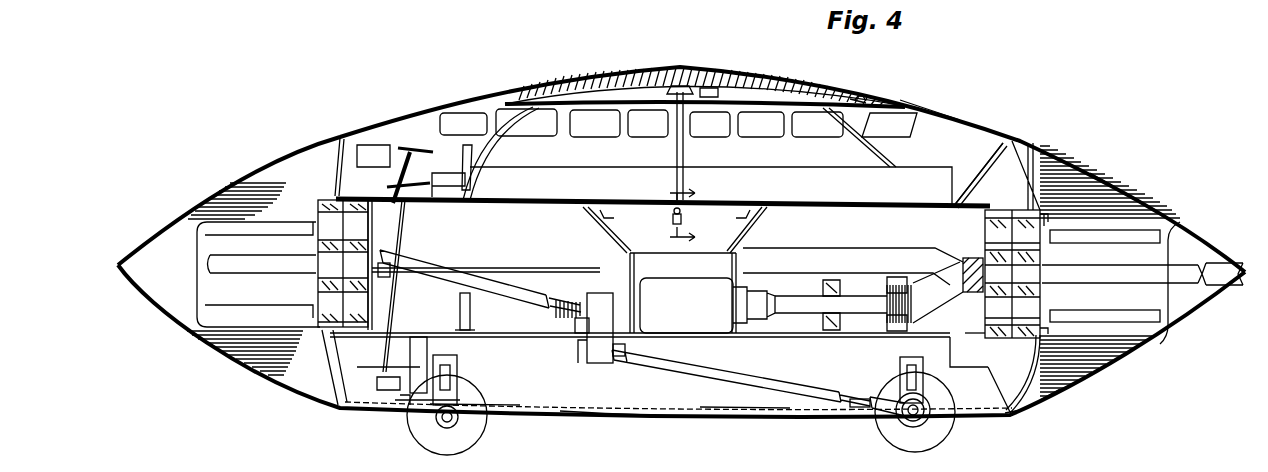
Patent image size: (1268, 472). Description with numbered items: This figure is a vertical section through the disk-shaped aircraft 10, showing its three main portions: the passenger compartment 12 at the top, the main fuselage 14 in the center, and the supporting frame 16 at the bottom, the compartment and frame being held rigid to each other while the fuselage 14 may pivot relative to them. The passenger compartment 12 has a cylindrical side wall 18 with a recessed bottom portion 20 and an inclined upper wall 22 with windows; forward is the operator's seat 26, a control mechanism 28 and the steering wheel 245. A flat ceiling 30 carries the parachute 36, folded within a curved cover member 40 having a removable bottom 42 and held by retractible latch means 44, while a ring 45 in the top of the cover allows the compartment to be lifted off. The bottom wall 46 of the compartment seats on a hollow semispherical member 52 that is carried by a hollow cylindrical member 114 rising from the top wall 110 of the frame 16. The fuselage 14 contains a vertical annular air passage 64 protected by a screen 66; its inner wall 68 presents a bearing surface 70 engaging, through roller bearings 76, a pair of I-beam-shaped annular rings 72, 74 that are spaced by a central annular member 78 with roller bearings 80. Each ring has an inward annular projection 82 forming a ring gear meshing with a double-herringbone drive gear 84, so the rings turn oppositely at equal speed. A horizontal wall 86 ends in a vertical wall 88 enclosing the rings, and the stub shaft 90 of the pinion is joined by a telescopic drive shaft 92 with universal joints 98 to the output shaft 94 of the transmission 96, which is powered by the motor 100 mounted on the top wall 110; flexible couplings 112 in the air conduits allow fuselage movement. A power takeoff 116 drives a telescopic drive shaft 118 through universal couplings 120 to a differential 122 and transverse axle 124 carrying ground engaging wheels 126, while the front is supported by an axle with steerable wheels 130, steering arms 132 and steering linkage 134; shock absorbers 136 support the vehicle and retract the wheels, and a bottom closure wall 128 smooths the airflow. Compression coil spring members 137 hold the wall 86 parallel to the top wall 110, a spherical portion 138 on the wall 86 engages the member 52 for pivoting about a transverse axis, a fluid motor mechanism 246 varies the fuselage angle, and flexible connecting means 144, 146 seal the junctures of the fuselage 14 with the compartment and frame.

The aircraft 10 is at (669, 212).
The passenger compartment 12 is at (982, 112).
The fuselage 14 is at (1206, 219).
The supporting frame 16 is at (648, 421).
The side wall 18 is at (1000, 157).
The recessed bottom portion 20 is at (950, 188).
The inclined upper wall 22 is at (948, 112).
The seat 26 is at (470, 186).
The control mechanism 28 is at (402, 137).
The ceiling 30 is at (762, 110).
The parachute 36 is at (715, 88).
The cover member 40 is at (750, 78).
The removable bottom 42 is at (805, 90).
The latch means 44 is at (857, 100).
The ring 45 is at (681, 86).
The bottom wall 46 is at (869, 209).
The semispherical member 52 is at (745, 238).
The annular passage 64 is at (1165, 242).
The screen 66 is at (1100, 181).
The inner wall 68 is at (1045, 386).
The bearing surface 70 is at (1018, 342).
The annular ring 72 is at (1040, 218).
The annular ring 74 is at (978, 338).
The roller bearings 76 is at (1036, 334).
The central annular member 78 is at (1042, 256).
The roller bearings 80 is at (1042, 300).
The annular projection 82 is at (1000, 306).
The drive gear 84 is at (317, 270).
The horizontal wall 86 is at (490, 266).
The vertical wall 88 is at (985, 235).
The stub shaft 90 is at (380, 262).
The telescopic drive shaft 92 is at (497, 300).
The output shaft 94 is at (586, 324).
The transmission 96 is at (603, 364).
The universal joint 98 is at (582, 310).
The motor 100 is at (713, 318).
The top wall 110 is at (792, 338).
The flexible couplings 112 is at (908, 263).
The hollow cylindrical member 114 is at (632, 268).
The power takeoff 116 is at (619, 357).
The telescopic drive shaft 118 is at (745, 374).
The universal couplings 120 is at (868, 412).
The differential 122 is at (928, 426).
The transverse axle 124 is at (888, 398).
The ground engaging wheels 126 is at (893, 437).
The bottom closure wall 128 is at (470, 417).
The wheels 130 is at (432, 445).
The steering arms 132 is at (410, 430).
The steering linkage 134 is at (388, 414).
The shock absorbers 136 is at (923, 375).
The compression coil spring members 137 is at (822, 290).
The spherical portion 138 is at (760, 238).
The flexible connecting means 144 is at (1012, 140).
The flexible connecting means 146 is at (1012, 411).
The steering wheel 245 is at (415, 121).
The fluid motor mechanism 246 is at (451, 316).